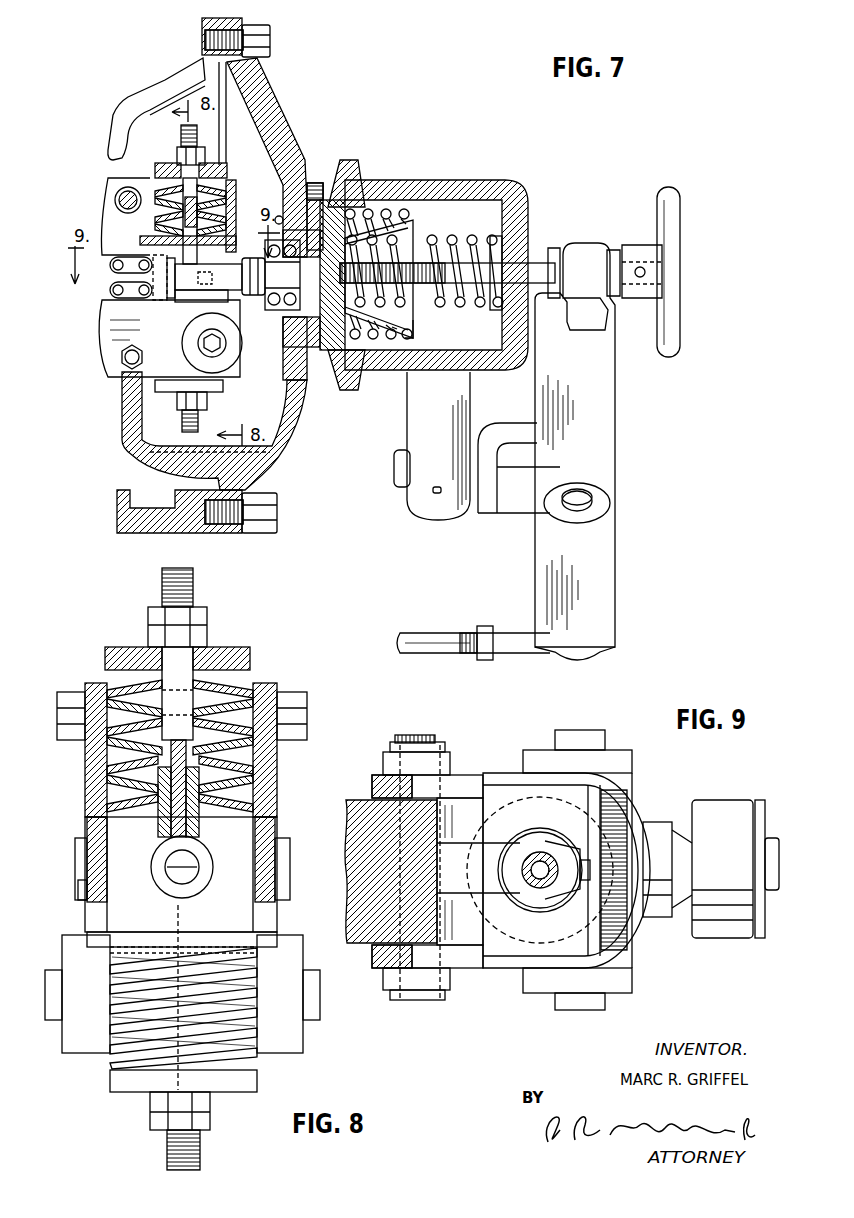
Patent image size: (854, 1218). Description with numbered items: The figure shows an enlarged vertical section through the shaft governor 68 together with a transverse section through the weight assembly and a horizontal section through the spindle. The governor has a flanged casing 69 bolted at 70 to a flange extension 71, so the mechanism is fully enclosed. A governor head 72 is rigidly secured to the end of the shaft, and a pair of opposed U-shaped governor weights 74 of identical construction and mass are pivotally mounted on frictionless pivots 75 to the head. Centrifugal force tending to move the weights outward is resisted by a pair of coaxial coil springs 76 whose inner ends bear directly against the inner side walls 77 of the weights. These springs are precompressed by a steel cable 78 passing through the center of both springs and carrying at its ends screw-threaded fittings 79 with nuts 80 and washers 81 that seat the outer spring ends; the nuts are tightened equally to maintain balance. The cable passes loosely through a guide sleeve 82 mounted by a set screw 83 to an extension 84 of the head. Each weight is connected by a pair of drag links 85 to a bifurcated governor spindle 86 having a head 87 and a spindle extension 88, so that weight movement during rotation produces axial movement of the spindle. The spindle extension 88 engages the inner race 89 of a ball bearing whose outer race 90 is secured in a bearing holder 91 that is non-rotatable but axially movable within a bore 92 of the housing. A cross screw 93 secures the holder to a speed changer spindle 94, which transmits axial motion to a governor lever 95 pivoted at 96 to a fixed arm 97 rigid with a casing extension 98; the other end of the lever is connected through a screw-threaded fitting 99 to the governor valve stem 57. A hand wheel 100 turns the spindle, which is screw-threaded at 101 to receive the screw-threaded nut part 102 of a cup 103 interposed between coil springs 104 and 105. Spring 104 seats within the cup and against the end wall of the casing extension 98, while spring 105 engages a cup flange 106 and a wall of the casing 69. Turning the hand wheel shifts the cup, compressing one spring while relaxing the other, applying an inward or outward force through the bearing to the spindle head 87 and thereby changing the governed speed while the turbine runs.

In FIG. 7, the governor valve stem 57 is at (418, 648).
In FIG. 7, the shaft governor 68 is at (293, 143).
In FIG. 7, the flanged casing 69 is at (300, 138).
In FIG. 7, the bolts 70 is at (262, 41).
In FIG. 7, the flange extension 71 is at (197, 75).
In FIG. 7, the governor head 72 is at (100, 211).
In FIG. 8, the governor head 72 is at (115, 895).
In FIG. 9, the governor head 72 is at (360, 899).
In FIG. 7, the governor weights 74 is at (232, 186).
In FIG. 8, the governor weights 74 is at (272, 771).
In FIG. 9, the governor weights 74 is at (552, 981).
In FIG. 7, the frictionless pivots 75 is at (115, 193).
In FIG. 8, the frictionless pivots 75 is at (57, 717).
In FIG. 9, the frictionless pivots 75 is at (416, 748).
In FIG. 7, the coil springs 76 is at (160, 214).
In FIG. 8, the coil springs 76 is at (250, 781).
In FIG. 8, the inner side walls 77 is at (240, 808).
In FIG. 7, the steel cable 78 is at (200, 217).
In FIG. 8, the steel cable 78 is at (165, 790).
In FIG. 7, the screw-threaded fittings 79 is at (181, 134).
In FIG. 8, the screw-threaded fittings 79 is at (193, 586).
In FIG. 7, the nuts 80 is at (177, 153).
In FIG. 8, the nuts 80 is at (205, 626).
In FIG. 7, the washers 81 is at (226, 164).
In FIG. 8, the washers 81 is at (238, 656).
In FIG. 7, the guide sleeve 82 is at (186, 246).
In FIG. 8, the guide sleeve 82 is at (171, 818).
In FIG. 9, the guide sleeve 82 is at (543, 852).
In FIG. 8, the set screw 83 is at (192, 866).
In FIG. 9, the set screw 83 is at (592, 862).
In FIG. 8, the extension 84 is at (155, 863).
In FIG. 9, the extension 84 is at (510, 895).
In FIG. 7, the drag links 85 is at (112, 276).
In FIG. 8, the drag links 85 is at (78, 839).
In FIG. 9, the drag links 85 is at (445, 772).
In FIG. 7, the governor spindle 86 is at (220, 276).
In FIG. 8, the governor spindle 86 is at (80, 886).
In FIG. 9, the governor spindle 86 is at (512, 790).
In FIG. 7, the head 87 is at (250, 296).
In FIG. 9, the head 87 is at (660, 906).
In FIG. 7, the spindle extension 88 is at (278, 216).
In FIG. 9, the spindle extension 88 is at (775, 838).
In FIG. 7, the inner race 89 is at (278, 312).
In FIG. 7, the outer race 90 is at (300, 347).
In FIG. 9, the outer race 90 is at (730, 926).
In FIG. 7, the bearing holder 91 is at (311, 186).
In FIG. 7, the bore 92 is at (336, 362).
In FIG. 7, the cross screw 93 is at (351, 196).
In FIG. 7, the speed changer spindle 94 is at (476, 262).
In FIG. 7, the governor lever 95 is at (598, 383).
In FIG. 7, the pivot 96 is at (594, 479).
In FIG. 7, the fixed arm 97 is at (428, 508).
In FIG. 7, the casing extension 98 is at (476, 181).
In FIG. 7, the screw-threaded fitting 99 is at (517, 634).
In FIG. 7, the hand wheel 100 is at (672, 338).
In FIG. 7, the screw-threaded portion 101 is at (412, 262).
In FIG. 7, the screw-threaded nut part 102 is at (372, 240).
In FIG. 7, the cup 103 is at (414, 313).
In FIG. 7, the coil spring 104 is at (500, 240).
In FIG. 7, the coil spring 105 is at (384, 342).
In FIG. 7, the cup flange 106 is at (414, 338).